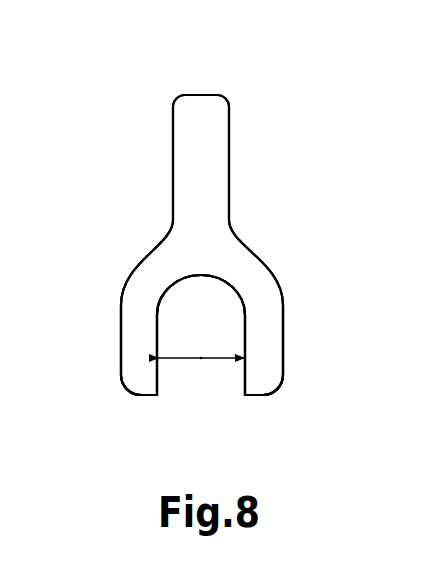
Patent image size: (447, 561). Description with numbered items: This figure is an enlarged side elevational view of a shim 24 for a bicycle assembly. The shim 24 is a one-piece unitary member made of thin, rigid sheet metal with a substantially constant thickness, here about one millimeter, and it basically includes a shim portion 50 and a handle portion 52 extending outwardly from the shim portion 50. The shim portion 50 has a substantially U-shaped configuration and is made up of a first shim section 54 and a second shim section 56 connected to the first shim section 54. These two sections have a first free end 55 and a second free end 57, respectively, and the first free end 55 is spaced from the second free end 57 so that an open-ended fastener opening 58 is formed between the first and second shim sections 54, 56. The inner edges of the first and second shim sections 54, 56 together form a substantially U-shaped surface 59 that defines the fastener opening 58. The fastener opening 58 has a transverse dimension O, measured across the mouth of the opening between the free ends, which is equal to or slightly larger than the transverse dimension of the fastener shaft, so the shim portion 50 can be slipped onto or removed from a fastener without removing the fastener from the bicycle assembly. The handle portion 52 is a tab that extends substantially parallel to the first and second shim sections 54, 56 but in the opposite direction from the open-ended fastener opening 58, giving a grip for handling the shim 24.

The shim 24 is at (266, 99).
The handle portion 52 is at (233, 162).
The shim portion 50 is at (286, 302).
The first shim section 54 is at (132, 320).
The second shim section 56 is at (267, 331).
The first free end 55 is at (138, 396).
The second free end 57 is at (268, 390).
The open-ended fastener opening 58 is at (200, 362).
The U-shaped surface 59 is at (230, 285).
The transverse dimension O is at (182, 360).